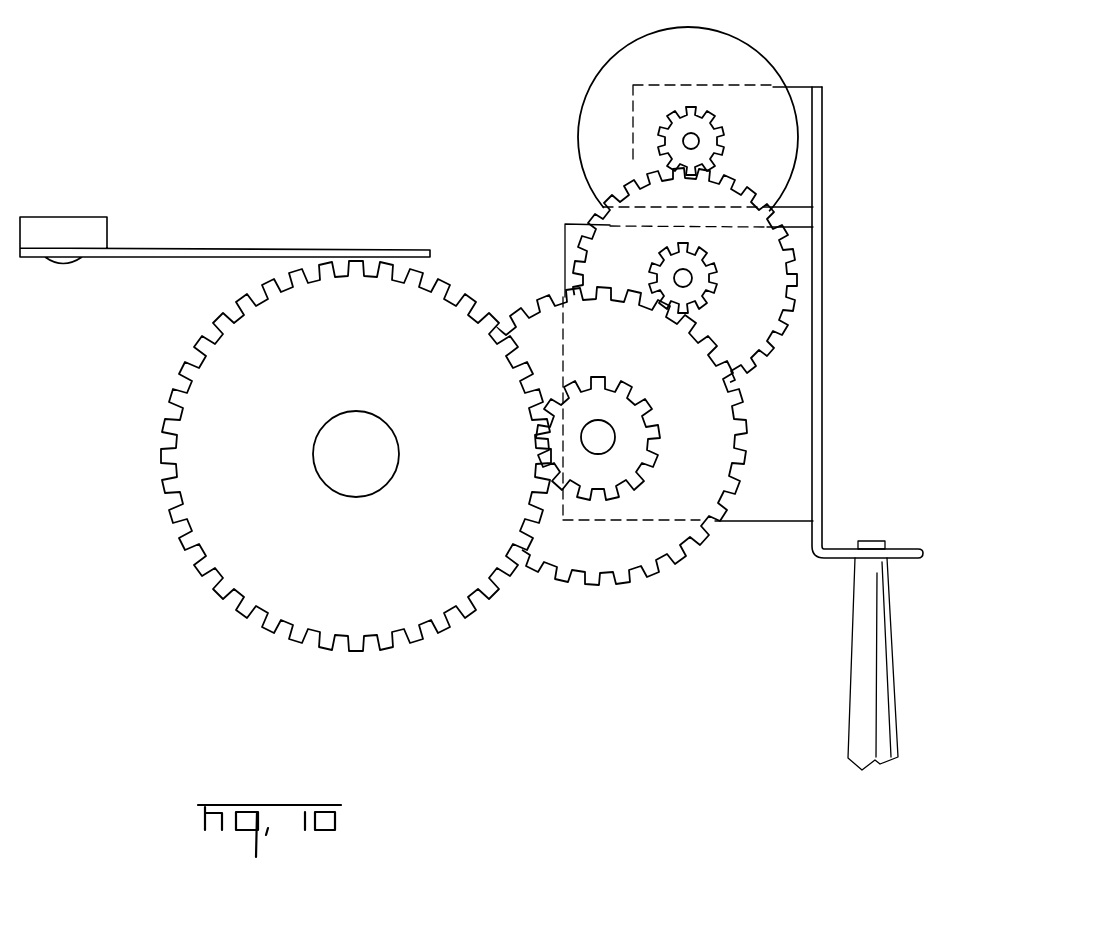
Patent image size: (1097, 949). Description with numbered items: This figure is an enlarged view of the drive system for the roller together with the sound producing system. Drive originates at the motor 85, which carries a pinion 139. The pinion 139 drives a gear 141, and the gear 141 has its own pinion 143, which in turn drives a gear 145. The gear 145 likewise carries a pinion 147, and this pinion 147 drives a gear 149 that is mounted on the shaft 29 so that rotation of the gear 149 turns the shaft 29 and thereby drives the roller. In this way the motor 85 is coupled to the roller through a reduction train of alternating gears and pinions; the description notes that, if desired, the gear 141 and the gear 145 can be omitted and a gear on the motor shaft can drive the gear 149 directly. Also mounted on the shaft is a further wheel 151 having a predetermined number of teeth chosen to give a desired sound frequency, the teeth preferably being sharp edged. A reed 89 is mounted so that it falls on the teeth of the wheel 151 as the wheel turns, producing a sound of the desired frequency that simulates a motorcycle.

The motor 85 is at (747, 60).
The pinion 139 is at (658, 137).
The gear 141 is at (601, 210).
The pinion 143 is at (702, 293).
The gear 145 is at (735, 437).
The pinion 147 is at (628, 482).
The gear 149 is at (465, 578).
The shaft 29 is at (345, 485).
The wheel 151 is at (425, 264).
The reed 89 is at (270, 248).